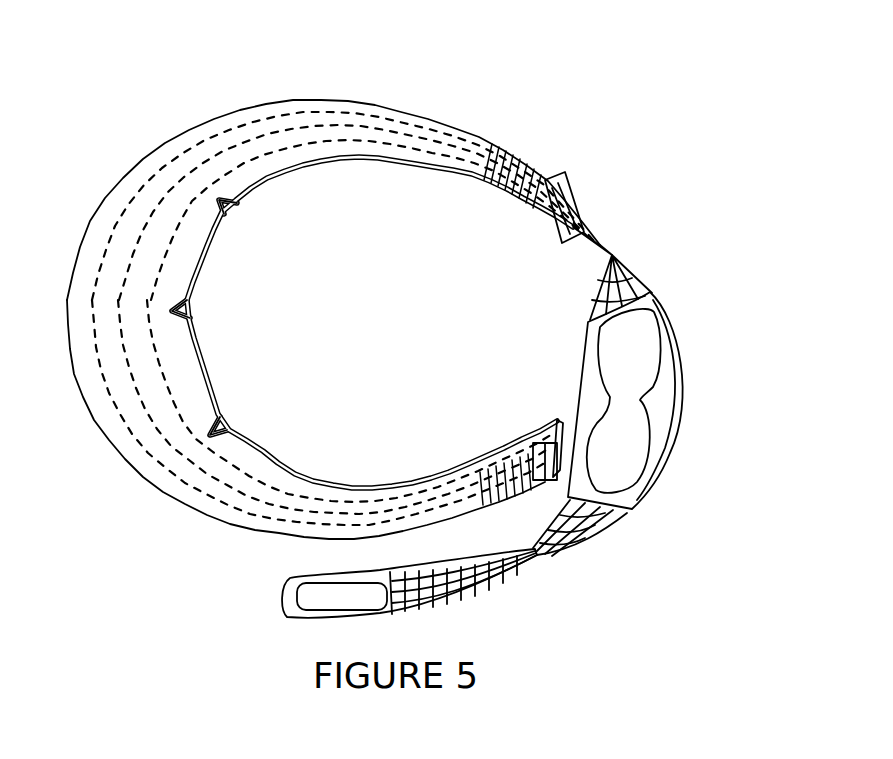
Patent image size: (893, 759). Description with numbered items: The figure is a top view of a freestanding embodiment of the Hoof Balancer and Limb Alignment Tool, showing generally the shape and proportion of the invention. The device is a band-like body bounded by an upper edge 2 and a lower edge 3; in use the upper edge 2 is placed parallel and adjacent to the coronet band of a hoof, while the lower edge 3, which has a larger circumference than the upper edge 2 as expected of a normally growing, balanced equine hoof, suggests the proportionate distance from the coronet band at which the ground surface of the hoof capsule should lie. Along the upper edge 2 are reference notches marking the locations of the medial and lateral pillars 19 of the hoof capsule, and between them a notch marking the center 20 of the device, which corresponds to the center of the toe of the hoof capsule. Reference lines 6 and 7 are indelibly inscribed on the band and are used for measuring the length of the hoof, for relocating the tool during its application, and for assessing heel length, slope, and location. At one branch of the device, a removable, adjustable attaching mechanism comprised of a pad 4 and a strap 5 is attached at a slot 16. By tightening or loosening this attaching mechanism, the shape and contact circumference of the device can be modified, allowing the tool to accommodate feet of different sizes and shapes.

The upper edge 2 is at (392, 170).
The lower edge 3 is at (308, 90).
The pad 4 is at (683, 352).
The strap 5 is at (582, 545).
The reference line 6 is at (512, 158).
The reference line 7 is at (172, 192).
The slot 16 is at (548, 192).
The pillars 19 is at (232, 210).
The center 20 is at (192, 313).